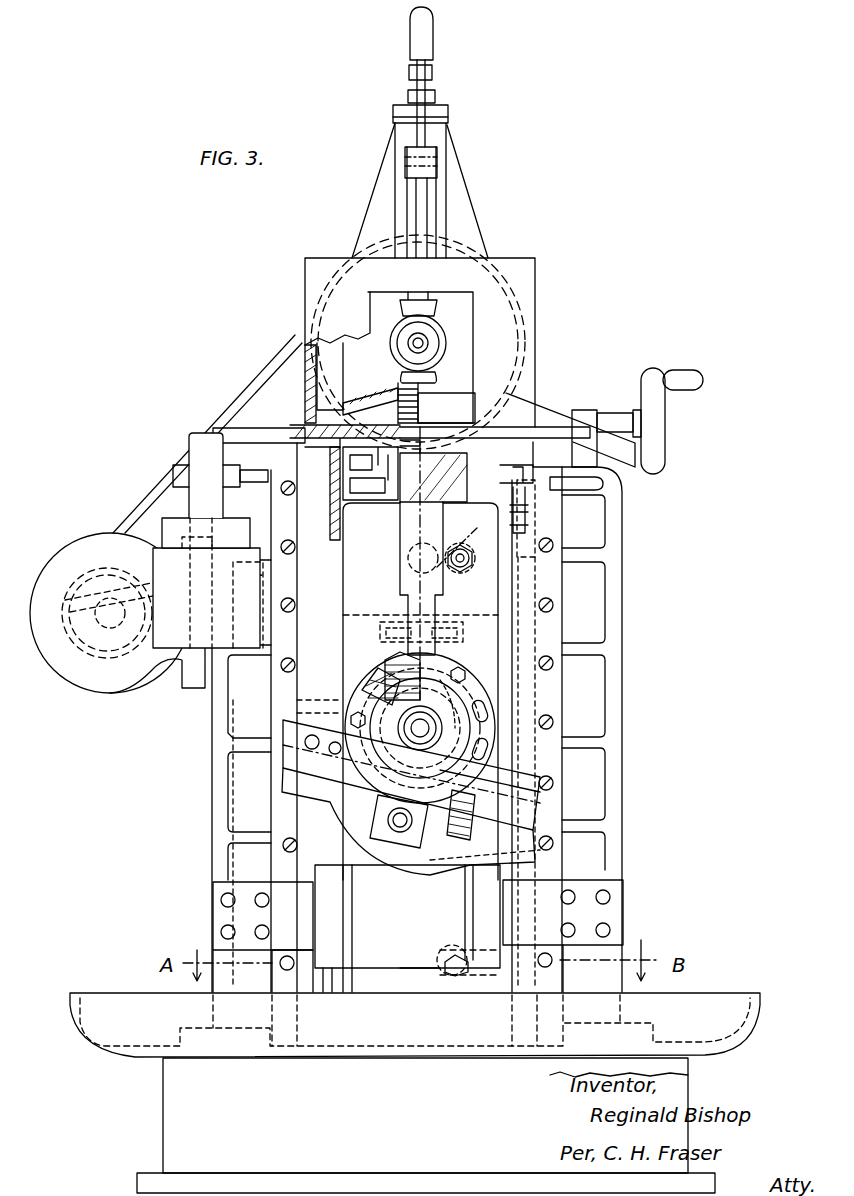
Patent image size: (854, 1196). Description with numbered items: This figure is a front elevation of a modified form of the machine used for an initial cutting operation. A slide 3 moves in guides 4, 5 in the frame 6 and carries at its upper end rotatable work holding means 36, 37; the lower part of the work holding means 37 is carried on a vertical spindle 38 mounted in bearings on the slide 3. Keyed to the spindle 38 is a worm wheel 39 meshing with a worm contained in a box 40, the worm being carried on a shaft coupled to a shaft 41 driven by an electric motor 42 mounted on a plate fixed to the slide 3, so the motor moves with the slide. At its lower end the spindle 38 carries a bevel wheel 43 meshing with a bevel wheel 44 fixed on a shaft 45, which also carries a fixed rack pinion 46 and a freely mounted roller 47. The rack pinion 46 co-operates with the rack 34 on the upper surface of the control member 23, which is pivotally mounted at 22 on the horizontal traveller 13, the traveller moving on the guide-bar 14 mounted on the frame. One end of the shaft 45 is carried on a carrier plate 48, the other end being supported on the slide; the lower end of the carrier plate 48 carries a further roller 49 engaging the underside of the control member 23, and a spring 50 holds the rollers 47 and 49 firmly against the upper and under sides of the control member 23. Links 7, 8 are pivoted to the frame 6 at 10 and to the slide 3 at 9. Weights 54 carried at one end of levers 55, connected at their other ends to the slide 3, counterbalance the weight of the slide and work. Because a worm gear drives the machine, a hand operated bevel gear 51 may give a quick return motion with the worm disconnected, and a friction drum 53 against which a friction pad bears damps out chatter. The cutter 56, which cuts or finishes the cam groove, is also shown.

The slide 3 is at (337, 541).
The guide 4 is at (550, 518).
The guide 5 is at (272, 690).
The frame 6 is at (608, 693).
The link 7 is at (444, 547).
The link 8 is at (452, 950).
The pivot on slide 9 is at (465, 565).
The pivot on frame 10 is at (400, 562).
The horizontal traveller 13 is at (407, 928).
The guide-bar 14 is at (235, 912).
The pivot of control member 22 is at (350, 792).
The control member 23 is at (470, 830).
The rack 34 is at (470, 785).
The rotatable work holding means 36 is at (437, 300).
The rotatable work holding means 37 is at (437, 380).
The vertical spindle 38 is at (440, 482).
The worm wheel 39 is at (322, 470).
The box 40 is at (446, 408).
The shaft 41 is at (248, 470).
The electric motor 42 is at (166, 514).
The bevel wheel 43 is at (388, 672).
The bevel wheel 44 is at (372, 690).
The shaft 45 is at (425, 725).
The rack pinion 46 is at (456, 684).
The roller 47 is at (290, 706).
The carrier plate 48 is at (358, 766).
The roller 49 is at (392, 850).
The spring 50 is at (530, 800).
The hand operated bevel gear 51 is at (362, 478).
The friction drum 53 is at (358, 447).
The weights 54 is at (605, 722).
The levers 55 is at (366, 622).
The cutter 56 is at (410, 344).